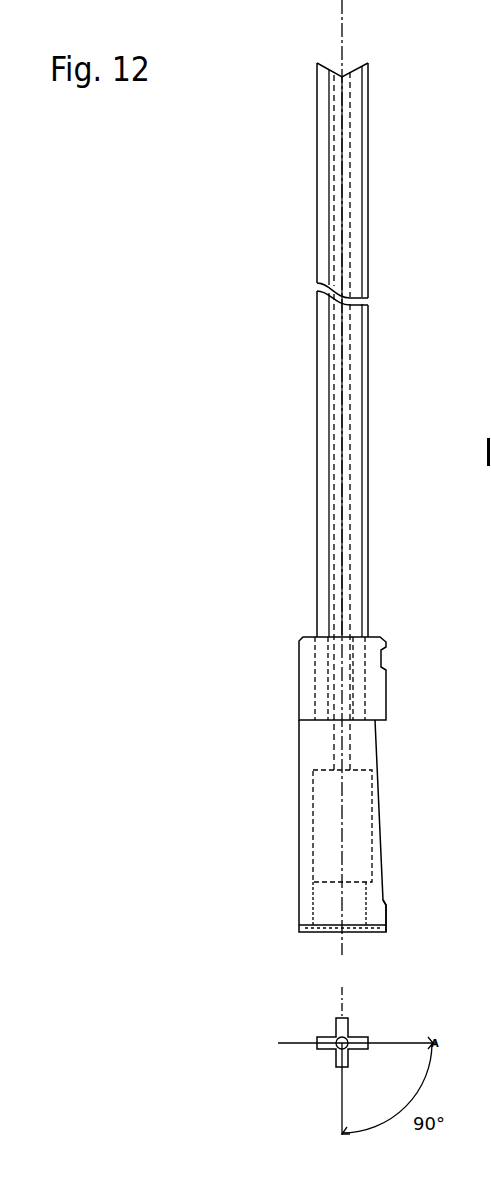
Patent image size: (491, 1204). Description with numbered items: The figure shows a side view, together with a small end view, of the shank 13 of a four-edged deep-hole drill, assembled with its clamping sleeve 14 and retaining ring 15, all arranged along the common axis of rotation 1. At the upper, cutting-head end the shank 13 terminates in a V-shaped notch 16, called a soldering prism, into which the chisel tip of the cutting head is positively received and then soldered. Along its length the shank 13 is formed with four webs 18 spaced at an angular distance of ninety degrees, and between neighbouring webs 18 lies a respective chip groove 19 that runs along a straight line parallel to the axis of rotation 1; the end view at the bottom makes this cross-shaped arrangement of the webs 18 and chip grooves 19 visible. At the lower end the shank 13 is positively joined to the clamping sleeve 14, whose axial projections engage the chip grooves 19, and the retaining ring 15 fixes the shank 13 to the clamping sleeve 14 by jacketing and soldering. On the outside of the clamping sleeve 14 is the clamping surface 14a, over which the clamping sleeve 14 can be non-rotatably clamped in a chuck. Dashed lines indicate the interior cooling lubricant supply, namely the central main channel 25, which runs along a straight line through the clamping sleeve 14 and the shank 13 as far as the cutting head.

The axis of rotation 1 is at (345, 17).
The V-shaped notch 16 is at (335, 57).
The shank 13 is at (308, 428).
The web 18 is at (372, 147).
The chip groove 19 is at (363, 192).
The central main channel 25 is at (338, 568).
The retaining ring 15 is at (295, 672).
The clamping sleeve 14 is at (293, 773).
The clamping surface 14a is at (386, 843).